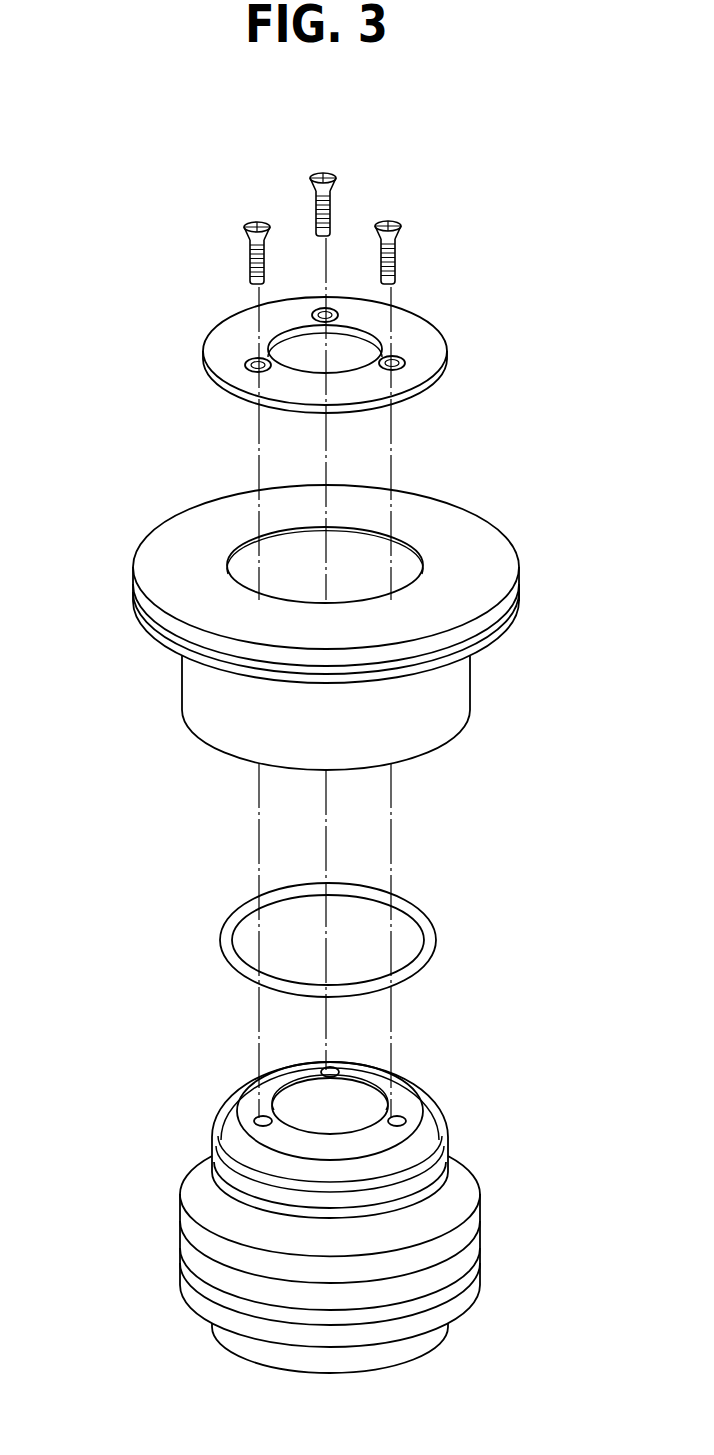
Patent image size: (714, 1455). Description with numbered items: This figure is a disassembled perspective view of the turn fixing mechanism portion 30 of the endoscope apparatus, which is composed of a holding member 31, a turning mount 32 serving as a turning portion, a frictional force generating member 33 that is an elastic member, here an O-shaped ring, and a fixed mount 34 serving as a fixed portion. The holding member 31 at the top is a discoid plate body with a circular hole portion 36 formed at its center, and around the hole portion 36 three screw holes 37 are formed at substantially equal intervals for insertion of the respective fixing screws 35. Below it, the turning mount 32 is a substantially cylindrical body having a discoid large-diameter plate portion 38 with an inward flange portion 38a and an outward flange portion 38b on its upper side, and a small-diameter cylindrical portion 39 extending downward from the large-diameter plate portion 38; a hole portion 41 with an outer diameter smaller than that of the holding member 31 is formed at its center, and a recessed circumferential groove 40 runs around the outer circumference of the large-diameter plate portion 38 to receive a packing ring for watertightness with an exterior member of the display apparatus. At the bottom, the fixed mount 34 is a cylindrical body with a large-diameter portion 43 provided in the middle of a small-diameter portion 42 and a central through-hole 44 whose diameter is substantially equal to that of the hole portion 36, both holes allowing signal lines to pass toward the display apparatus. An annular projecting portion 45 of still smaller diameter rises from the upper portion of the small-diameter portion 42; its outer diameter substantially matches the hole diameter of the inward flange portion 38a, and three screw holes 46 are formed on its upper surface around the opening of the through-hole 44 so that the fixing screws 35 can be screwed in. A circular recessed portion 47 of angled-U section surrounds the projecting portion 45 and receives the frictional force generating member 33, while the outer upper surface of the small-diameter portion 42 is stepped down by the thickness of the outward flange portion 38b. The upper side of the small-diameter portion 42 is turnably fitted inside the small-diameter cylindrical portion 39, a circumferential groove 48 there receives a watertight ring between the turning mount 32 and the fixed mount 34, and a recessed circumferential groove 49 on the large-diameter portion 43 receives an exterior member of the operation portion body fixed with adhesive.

The turn fixing mechanism portion 30 is at (204, 192).
The holding member 31 is at (287, 320).
The turning mount 32 is at (310, 599).
The frictional force generating member 33 is at (221, 936).
The fixed mount 34 is at (319, 1189).
The fixing screws 35 is at (323, 172).
The hole portion 36 is at (348, 328).
The screw holes 37 is at (319, 308).
The large-diameter plate portion 38 is at (193, 520).
The inward flange portion 38a is at (300, 546).
The outward flange portion 38b is at (507, 645).
The small-diameter cylindrical portion 39 is at (183, 680).
The circumferential groove 40 is at (137, 592).
The hole portion 41 is at (350, 548).
The small-diameter portion 42 is at (443, 1192).
The large-diameter portion 43 is at (465, 1287).
The through-hole 44 is at (350, 1104).
The projecting portion 45 is at (215, 1125).
The screw holes 46 is at (329, 1067).
The recessed portion 47 is at (433, 1138).
The circumferential groove 48 is at (210, 1163).
The circumferential groove 49 is at (478, 1253).